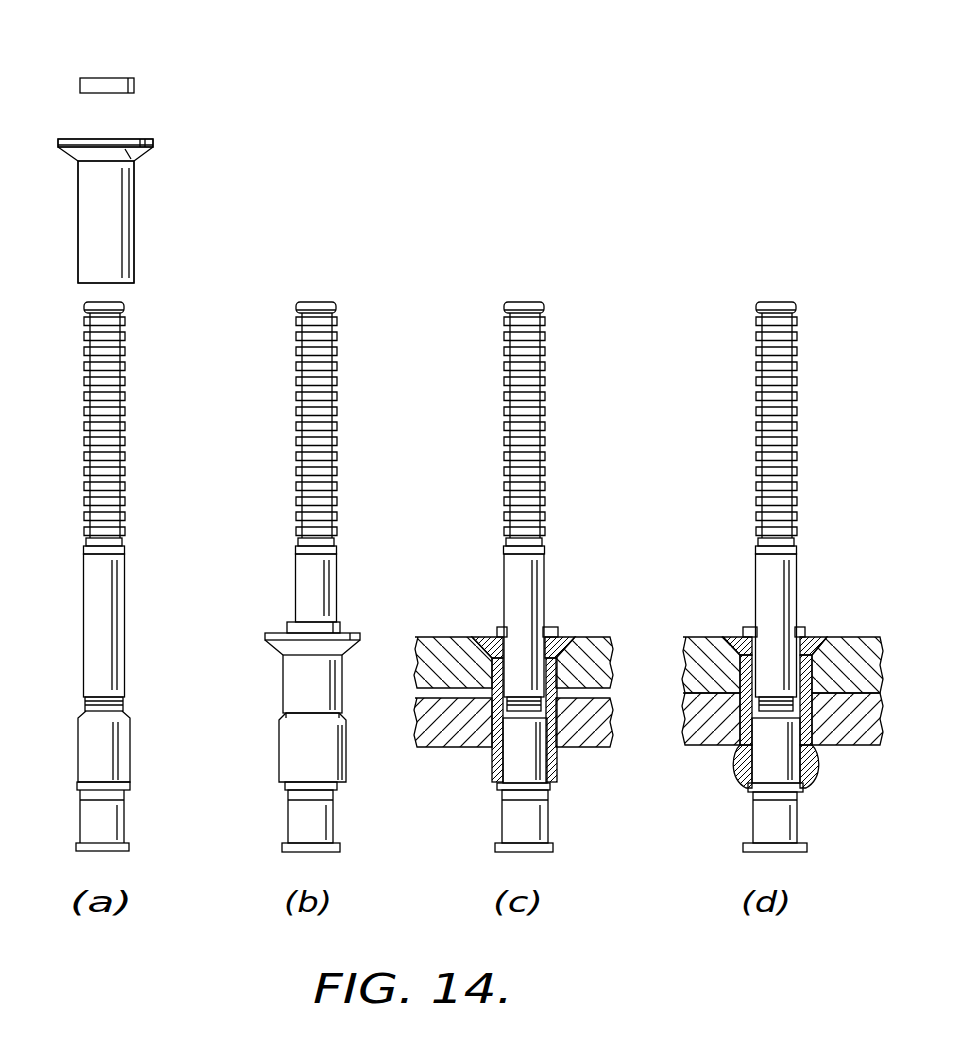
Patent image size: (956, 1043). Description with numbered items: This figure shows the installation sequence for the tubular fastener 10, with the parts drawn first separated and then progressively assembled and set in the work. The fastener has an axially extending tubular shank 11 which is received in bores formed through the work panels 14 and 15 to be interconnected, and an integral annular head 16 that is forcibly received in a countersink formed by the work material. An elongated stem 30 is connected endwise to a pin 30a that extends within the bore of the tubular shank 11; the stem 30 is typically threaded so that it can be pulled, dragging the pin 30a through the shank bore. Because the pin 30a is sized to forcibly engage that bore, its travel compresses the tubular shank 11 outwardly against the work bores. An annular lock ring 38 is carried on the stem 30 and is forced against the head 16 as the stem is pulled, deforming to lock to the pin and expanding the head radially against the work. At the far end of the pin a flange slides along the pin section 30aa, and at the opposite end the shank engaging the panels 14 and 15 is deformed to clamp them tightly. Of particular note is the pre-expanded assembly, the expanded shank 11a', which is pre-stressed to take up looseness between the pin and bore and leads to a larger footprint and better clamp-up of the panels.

The tubular fastener 10 is at (164, 265).
The tubular shank 11 is at (78, 207).
The expanded shank 11a' is at (505, 781).
The work panel 14 is at (442, 744).
The work panel 15 is at (430, 645).
The annular head 16 is at (165, 137).
The stem 30 is at (160, 596).
The pin 30a is at (85, 740).
The pin section 30aa is at (117, 817).
The lock ring 38 is at (115, 82).